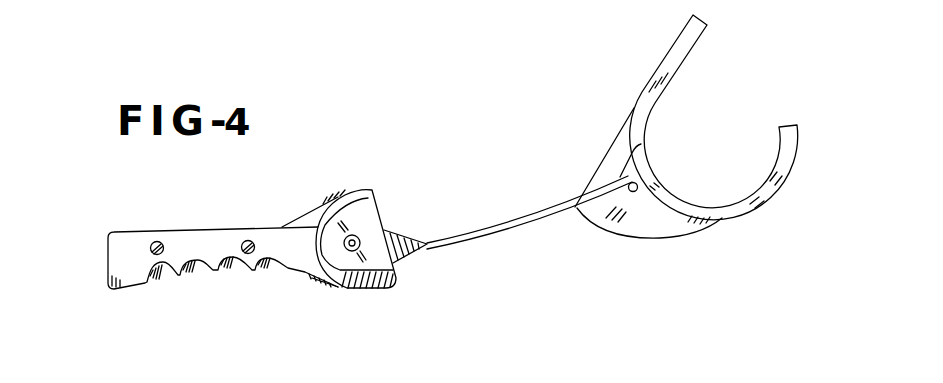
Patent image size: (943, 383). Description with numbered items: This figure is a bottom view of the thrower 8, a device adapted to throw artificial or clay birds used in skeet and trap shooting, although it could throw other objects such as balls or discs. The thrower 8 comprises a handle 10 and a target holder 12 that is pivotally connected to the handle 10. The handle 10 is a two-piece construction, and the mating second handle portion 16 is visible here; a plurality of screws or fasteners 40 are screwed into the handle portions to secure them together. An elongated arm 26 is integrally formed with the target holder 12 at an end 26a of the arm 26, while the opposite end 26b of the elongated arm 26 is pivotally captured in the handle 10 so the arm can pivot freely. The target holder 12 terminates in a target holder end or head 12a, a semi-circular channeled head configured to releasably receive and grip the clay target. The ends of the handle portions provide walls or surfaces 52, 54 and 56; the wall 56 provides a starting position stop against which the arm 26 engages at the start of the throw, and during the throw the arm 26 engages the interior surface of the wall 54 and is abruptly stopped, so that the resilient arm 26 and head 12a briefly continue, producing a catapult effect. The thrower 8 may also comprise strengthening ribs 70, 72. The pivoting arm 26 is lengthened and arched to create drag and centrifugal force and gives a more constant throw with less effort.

The thrower 8 is at (432, 184).
The handle 10 is at (105, 258).
The target holder 12 is at (517, 206).
The target holder end 12a is at (748, 210).
The second handle portion 16 is at (213, 254).
The elongated arm 26 is at (510, 233).
The end of the arm 26a is at (643, 143).
The end of the elongated arm 26b is at (407, 262).
The screws or fasteners 40 is at (243, 243).
The wall 52 is at (368, 215).
The wall 54 is at (340, 200).
The wall 56 is at (372, 283).
The strengthening rib 70 is at (603, 157).
The strengthening rib 72 is at (310, 217).